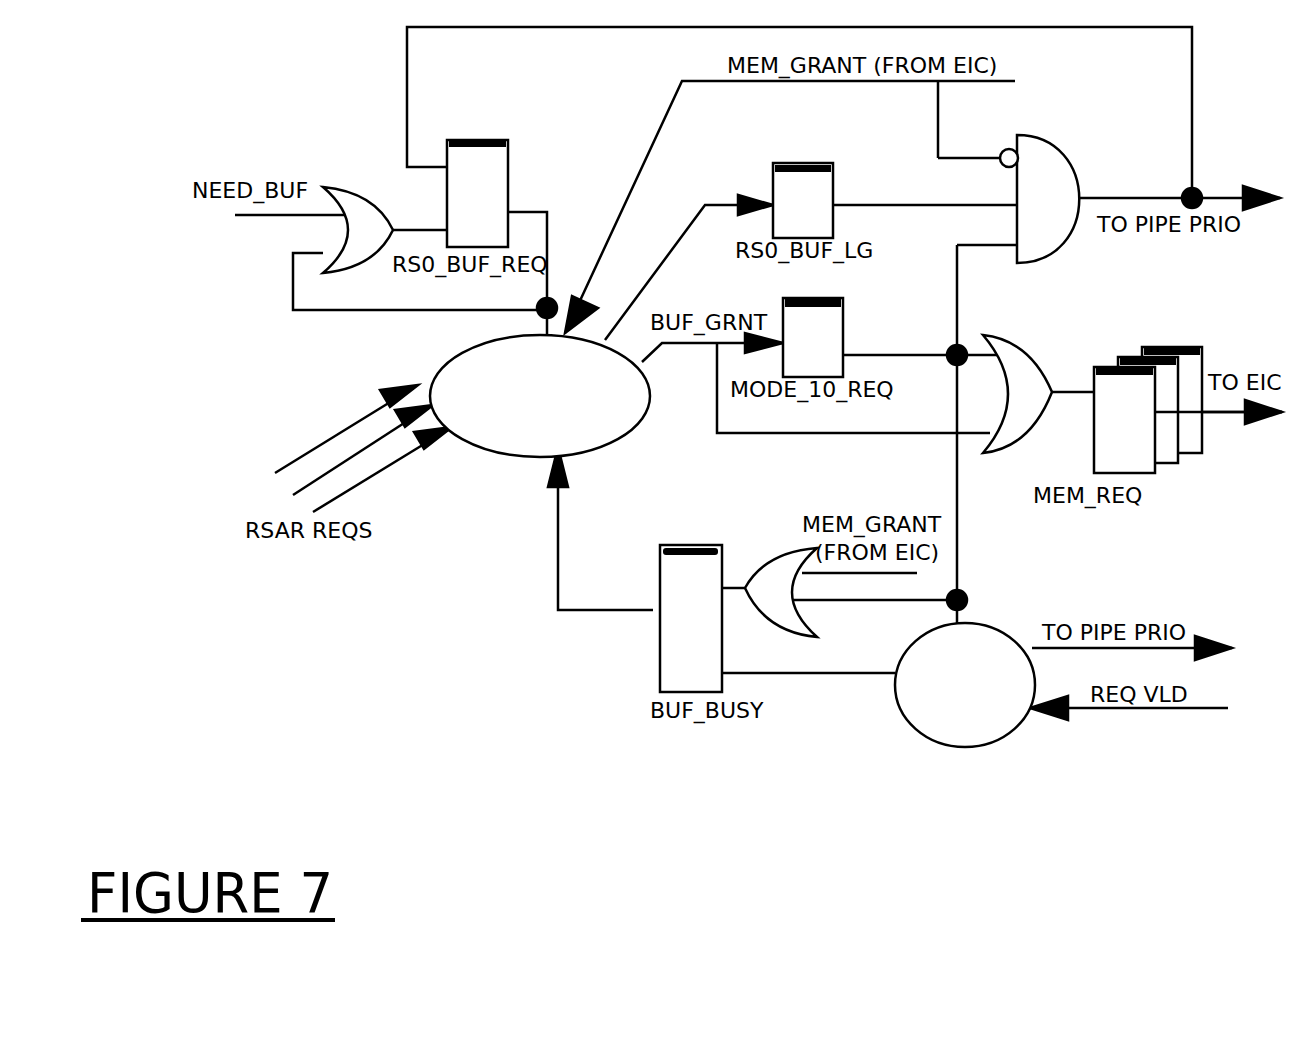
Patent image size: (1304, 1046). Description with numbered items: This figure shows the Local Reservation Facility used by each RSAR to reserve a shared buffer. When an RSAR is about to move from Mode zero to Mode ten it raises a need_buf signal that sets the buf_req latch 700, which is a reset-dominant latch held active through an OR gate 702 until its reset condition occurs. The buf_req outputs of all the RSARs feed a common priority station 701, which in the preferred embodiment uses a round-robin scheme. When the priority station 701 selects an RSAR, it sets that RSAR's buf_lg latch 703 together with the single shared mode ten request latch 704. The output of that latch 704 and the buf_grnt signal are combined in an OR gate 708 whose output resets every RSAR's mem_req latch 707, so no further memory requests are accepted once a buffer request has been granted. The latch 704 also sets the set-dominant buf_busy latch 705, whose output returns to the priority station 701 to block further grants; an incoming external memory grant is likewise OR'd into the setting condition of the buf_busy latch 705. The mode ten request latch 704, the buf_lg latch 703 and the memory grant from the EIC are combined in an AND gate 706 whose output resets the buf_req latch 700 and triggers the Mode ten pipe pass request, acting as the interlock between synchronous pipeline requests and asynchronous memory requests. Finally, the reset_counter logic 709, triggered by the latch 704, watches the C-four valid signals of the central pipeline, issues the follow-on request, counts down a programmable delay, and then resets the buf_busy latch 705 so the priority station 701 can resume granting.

The buf_req latch 700 is at (508, 183).
The priority station 701 is at (532, 457).
The OR gate 702 is at (362, 188).
The buf_lg latch 703 is at (772, 165).
The mode_10_req latch 704 is at (843, 355).
The buf_busy latch 705 is at (648, 657).
The AND gate 706 is at (1077, 150).
The mem_req latch 707 is at (1165, 462).
The OR gate 708 is at (1038, 355).
The reset_counter logic 709 is at (907, 730).